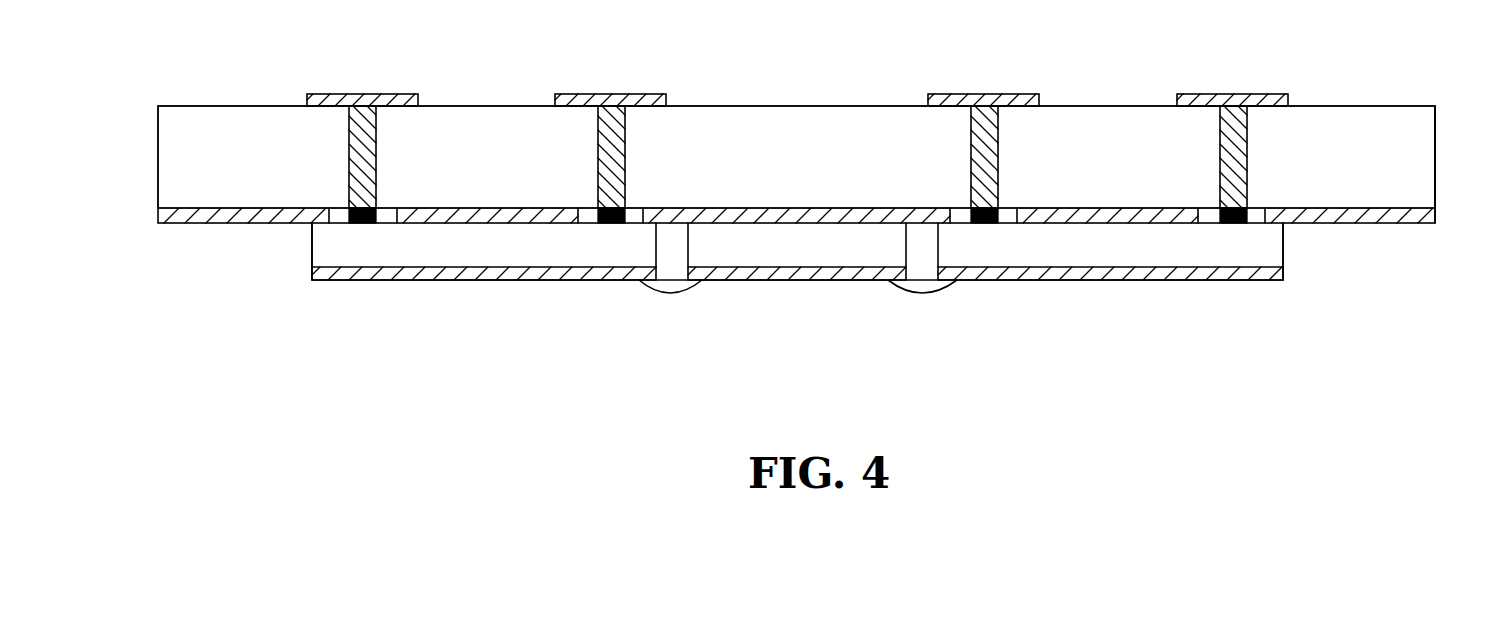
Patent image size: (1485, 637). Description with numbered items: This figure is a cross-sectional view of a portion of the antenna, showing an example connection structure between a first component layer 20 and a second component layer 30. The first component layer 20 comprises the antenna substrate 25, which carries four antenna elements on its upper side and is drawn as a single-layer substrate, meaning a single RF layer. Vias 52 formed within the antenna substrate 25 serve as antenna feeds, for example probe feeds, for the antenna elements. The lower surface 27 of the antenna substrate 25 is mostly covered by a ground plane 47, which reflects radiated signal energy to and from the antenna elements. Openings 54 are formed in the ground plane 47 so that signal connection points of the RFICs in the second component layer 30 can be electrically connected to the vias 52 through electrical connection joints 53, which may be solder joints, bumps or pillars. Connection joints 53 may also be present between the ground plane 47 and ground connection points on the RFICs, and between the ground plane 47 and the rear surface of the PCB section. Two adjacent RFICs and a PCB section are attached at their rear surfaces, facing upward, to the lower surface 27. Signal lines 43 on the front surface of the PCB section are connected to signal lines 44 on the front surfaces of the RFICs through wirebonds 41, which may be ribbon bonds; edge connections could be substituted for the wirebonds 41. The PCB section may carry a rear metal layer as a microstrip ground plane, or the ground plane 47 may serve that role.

The first component layer 20 is at (152, 107).
The antenna substrate 25 is at (262, 170).
The via 52 is at (378, 149).
The lower surface 27 is at (592, 212).
The electrical connection joint 53 is at (349, 216).
The opening 54 is at (385, 221).
The ground plane 47 is at (1413, 207).
The second component layer 30 is at (152, 227).
The signal line 44 is at (614, 281).
The signal line 43 is at (747, 279).
The wirebond 41 is at (668, 295).